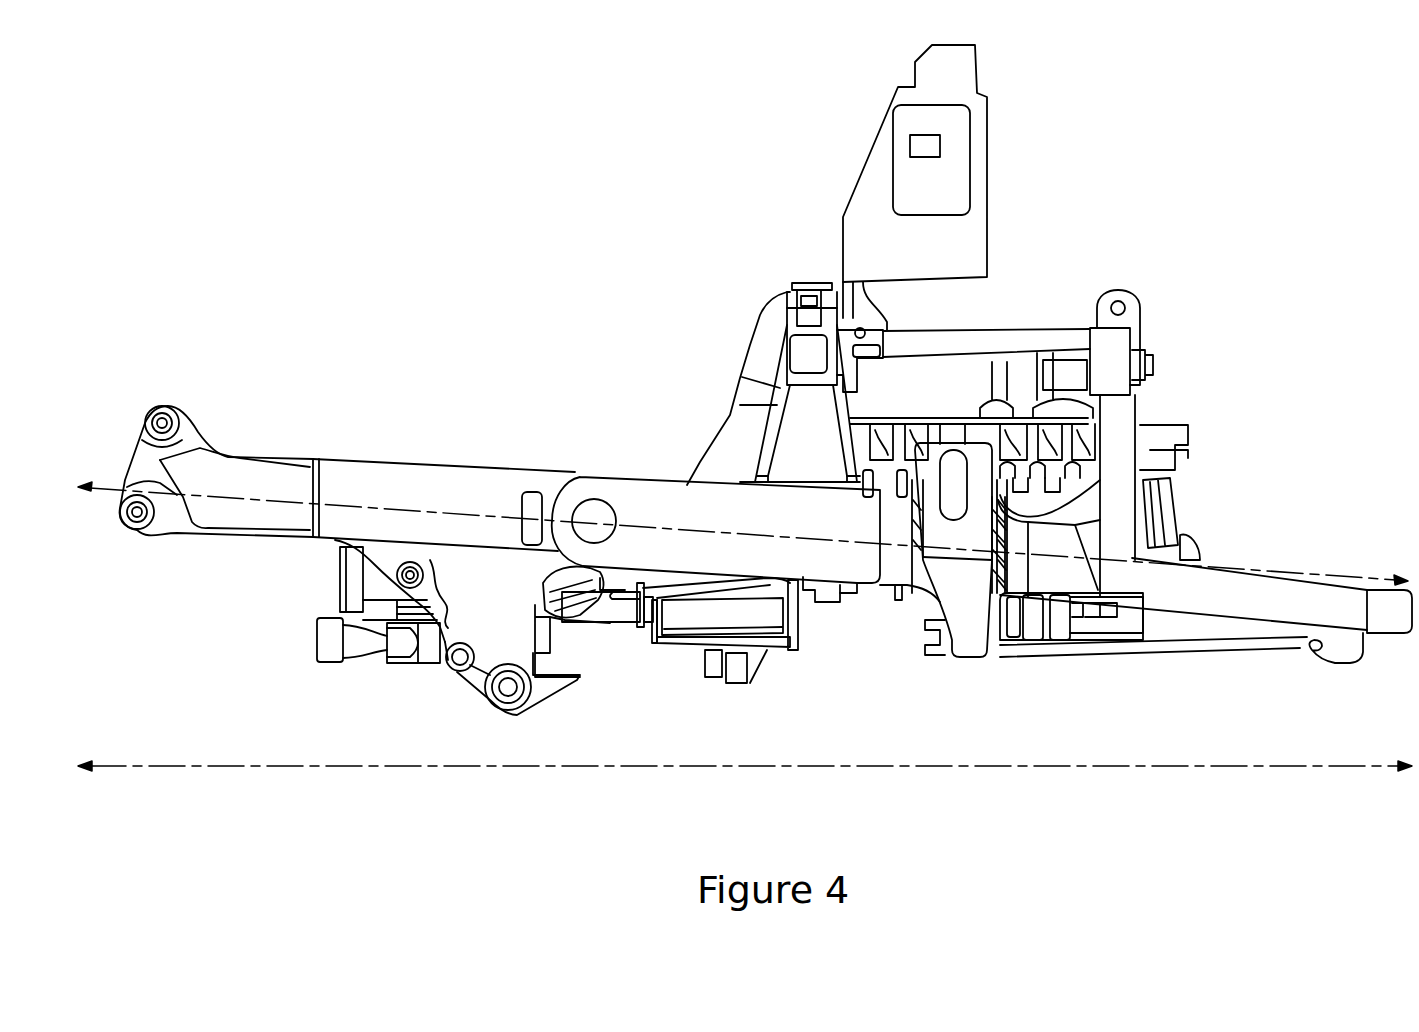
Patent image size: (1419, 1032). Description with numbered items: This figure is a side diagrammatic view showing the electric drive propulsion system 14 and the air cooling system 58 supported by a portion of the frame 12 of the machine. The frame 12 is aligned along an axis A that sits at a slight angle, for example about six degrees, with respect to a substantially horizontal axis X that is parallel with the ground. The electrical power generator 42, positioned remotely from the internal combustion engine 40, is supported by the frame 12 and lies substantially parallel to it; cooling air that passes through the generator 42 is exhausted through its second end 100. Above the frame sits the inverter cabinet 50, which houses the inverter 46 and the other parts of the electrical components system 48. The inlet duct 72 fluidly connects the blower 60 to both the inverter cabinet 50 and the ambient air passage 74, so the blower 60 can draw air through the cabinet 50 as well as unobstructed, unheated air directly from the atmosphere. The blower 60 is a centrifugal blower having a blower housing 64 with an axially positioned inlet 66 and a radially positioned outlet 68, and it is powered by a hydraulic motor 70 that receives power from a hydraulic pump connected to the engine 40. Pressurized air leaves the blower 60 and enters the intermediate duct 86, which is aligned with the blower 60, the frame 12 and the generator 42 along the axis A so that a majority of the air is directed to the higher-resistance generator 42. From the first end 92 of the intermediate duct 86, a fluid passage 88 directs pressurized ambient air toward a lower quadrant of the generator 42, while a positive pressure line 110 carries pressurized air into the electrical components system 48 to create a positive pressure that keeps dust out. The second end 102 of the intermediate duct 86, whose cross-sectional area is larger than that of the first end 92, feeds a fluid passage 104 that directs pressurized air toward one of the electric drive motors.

The frame 12 is at (412, 497).
The electric drive propulsion system 14 is at (580, 292).
The internal combustion engine 40 is at (1095, 397).
The electrical power generator 42 is at (395, 612).
The inverter 46 is at (918, 143).
The electrical components system 48 is at (950, 172).
The inverter cabinet 50 is at (852, 190).
The air cooling system 58 is at (680, 445).
The blower 60 is at (738, 655).
The blower housing 64 is at (770, 618).
The axially positioned inlet 66 is at (775, 598).
The radially positioned outlet 68 is at (655, 620).
The hydraulic motor 70 is at (720, 680).
The inlet duct 72 is at (762, 345).
The ambient air passage 74 is at (868, 308).
The intermediate duct 86 is at (565, 640).
The fluid passage 88 is at (570, 585).
The first end 92 is at (617, 628).
The second end 100 is at (330, 580).
The second end 102 is at (420, 672).
The fluid passage 104 is at (345, 645).
The positive pressure line 110 is at (645, 612).